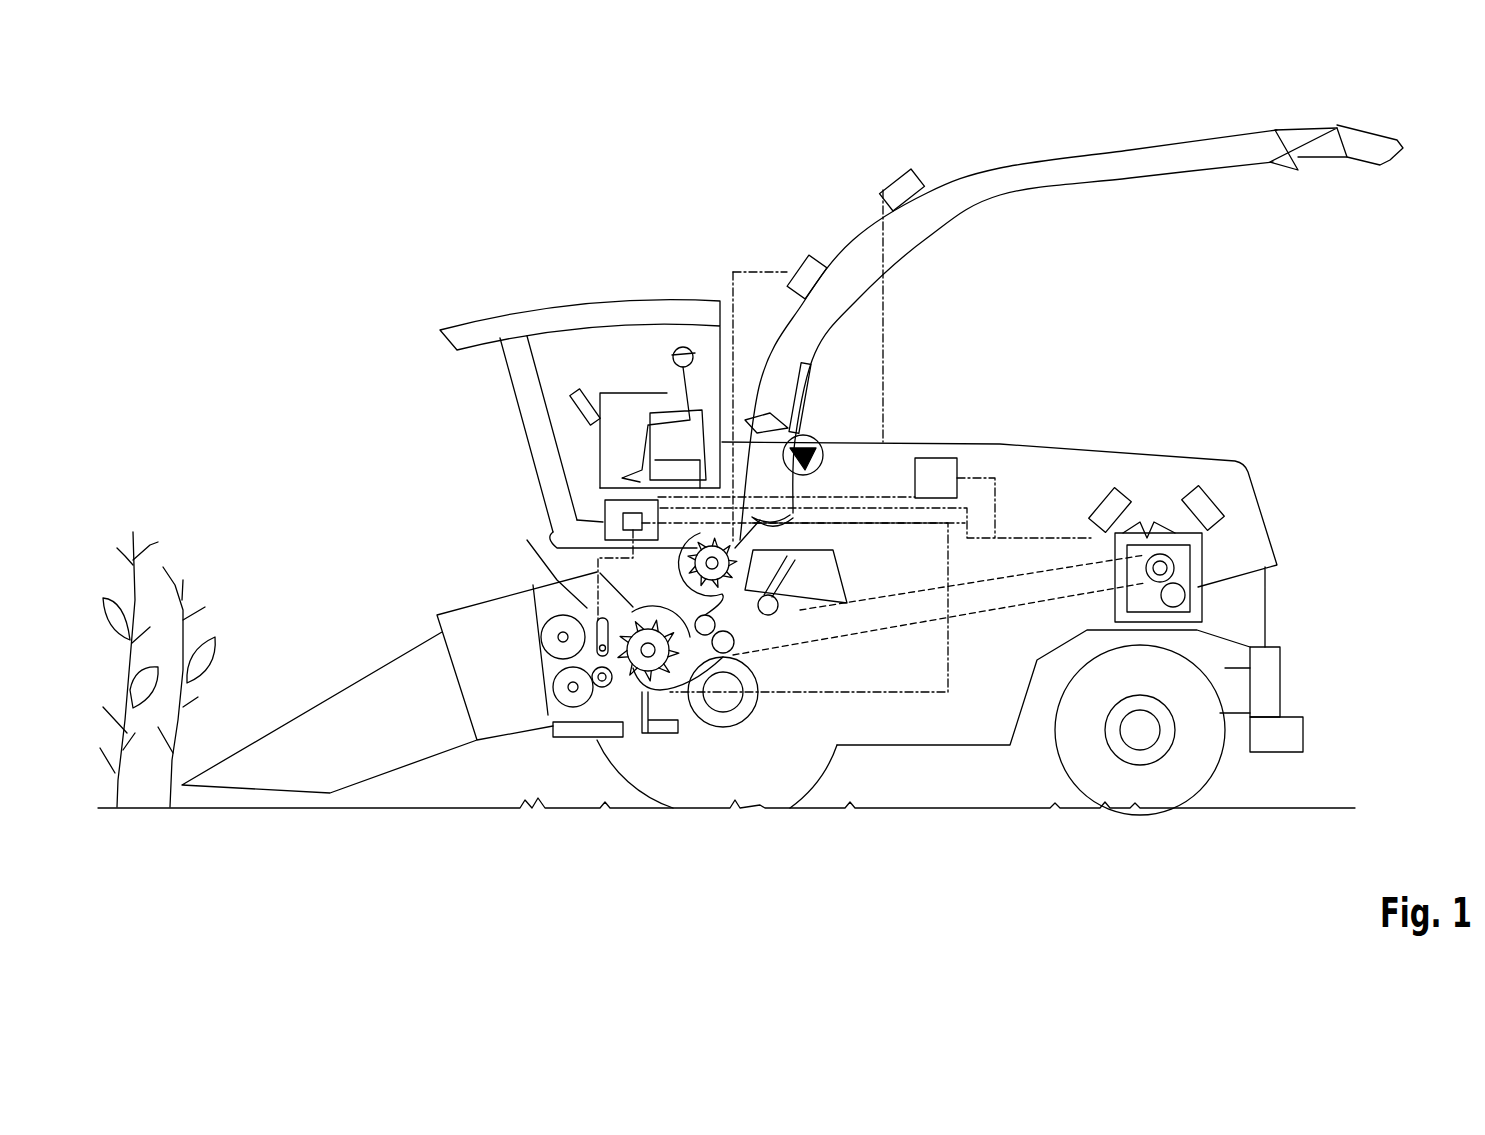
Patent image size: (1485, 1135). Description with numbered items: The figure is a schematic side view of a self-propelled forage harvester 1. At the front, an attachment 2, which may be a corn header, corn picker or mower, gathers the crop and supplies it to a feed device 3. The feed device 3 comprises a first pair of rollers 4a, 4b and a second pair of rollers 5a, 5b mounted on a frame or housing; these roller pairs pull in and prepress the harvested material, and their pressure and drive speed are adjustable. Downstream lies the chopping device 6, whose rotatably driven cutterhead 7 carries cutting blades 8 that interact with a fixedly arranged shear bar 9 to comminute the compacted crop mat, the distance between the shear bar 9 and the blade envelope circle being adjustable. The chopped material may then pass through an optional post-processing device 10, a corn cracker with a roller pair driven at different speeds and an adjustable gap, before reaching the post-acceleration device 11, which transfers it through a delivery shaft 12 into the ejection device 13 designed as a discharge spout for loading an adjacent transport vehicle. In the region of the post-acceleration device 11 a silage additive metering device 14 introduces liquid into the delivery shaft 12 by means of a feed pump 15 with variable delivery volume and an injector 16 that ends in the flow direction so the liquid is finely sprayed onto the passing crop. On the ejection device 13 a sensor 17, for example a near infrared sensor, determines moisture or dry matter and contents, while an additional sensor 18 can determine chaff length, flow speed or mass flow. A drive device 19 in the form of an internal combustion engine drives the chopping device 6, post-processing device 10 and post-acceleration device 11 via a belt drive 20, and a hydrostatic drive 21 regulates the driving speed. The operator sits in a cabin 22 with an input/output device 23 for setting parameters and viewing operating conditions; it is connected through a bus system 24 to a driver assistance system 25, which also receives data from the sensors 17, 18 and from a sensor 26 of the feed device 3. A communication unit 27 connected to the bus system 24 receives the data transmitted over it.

The forage harvester 1 is at (313, 160).
The attachment 2 is at (332, 735).
The feed device 3 is at (588, 748).
The first roller pair roller 4a is at (543, 637).
The first roller pair roller 4b is at (572, 690).
The second roller pair roller 5a is at (598, 625).
The second roller pair roller 5b is at (600, 682).
The chopping device 6 is at (668, 702).
The cutterhead 7 is at (727, 715).
The cutting blades 8 is at (660, 698).
The shear bar 9 is at (633, 697).
The post-processing device 10 is at (758, 650).
The post-acceleration device 11 is at (815, 452).
The delivery shaft 12 is at (732, 490).
The ejection device 13 is at (1000, 185).
The silage additive metering device 14 is at (823, 425).
The feed pump 15 is at (823, 445).
The injector 16 is at (755, 540).
The sensor 17 is at (808, 264).
The additional sensor 18 is at (900, 180).
The drive device 19 is at (1197, 527).
The belt drive 20 is at (1012, 615).
The hydrostatic drive 21 is at (712, 680).
The cabin 22 is at (478, 322).
The input/output device 23 is at (605, 508).
The bus system 24 is at (575, 425).
The driver assistance system 25 is at (605, 515).
The sensor 26 is at (590, 610).
The communication unit 27 is at (957, 460).